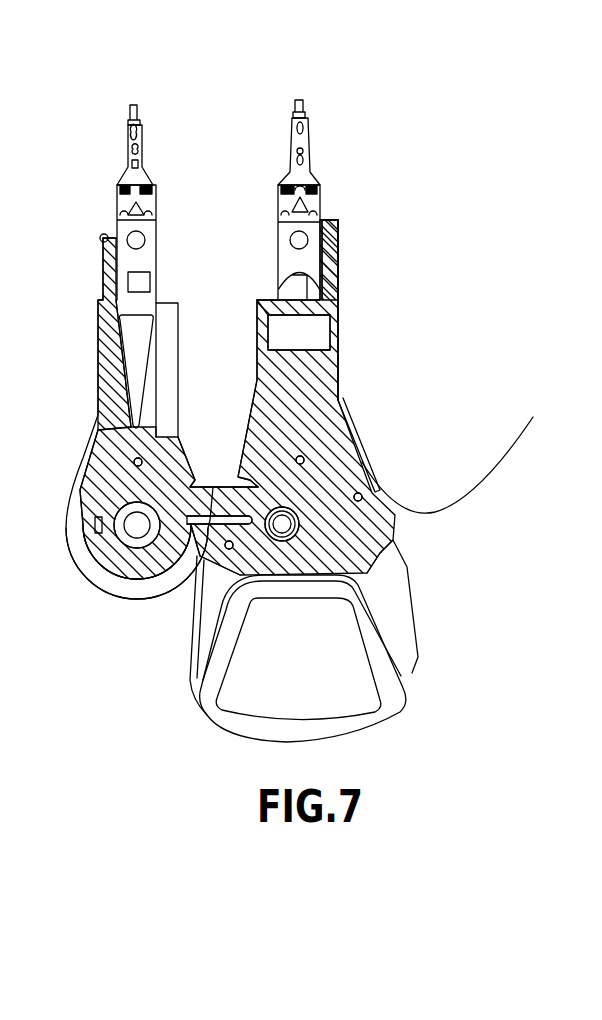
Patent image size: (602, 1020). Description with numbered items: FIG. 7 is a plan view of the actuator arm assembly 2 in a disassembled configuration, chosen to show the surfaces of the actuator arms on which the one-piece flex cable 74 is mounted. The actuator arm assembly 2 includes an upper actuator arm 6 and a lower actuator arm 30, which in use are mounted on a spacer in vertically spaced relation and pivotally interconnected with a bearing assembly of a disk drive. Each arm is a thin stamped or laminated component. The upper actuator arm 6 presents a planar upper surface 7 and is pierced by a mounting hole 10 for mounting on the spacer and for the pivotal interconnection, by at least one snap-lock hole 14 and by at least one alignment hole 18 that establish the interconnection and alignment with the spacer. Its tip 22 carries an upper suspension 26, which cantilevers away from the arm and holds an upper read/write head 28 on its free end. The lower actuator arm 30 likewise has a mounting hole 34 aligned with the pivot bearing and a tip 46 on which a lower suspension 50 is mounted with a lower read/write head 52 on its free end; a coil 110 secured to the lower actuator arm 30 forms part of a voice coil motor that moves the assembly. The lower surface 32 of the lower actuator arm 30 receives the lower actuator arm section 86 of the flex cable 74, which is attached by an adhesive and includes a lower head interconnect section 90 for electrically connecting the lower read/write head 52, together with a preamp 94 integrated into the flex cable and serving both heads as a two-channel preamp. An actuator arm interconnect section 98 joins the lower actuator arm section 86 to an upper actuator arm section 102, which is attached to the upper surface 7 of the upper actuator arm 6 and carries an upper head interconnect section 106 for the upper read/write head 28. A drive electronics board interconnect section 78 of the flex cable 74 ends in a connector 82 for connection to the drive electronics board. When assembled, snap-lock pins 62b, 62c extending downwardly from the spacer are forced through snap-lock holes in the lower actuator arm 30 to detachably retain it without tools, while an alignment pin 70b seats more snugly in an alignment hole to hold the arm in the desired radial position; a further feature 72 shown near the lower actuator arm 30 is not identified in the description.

The actuator arm assembly 2 is at (475, 118).
The upper actuator arm 6 is at (158, 290).
The planar upper surface 7 is at (97, 563).
The mounting hole 10 is at (137, 525).
The snap-lock hole 14 is at (98, 525).
The alignment hole 18 is at (142, 458).
The tip 22 is at (150, 252).
The upper suspension 26 is at (145, 167).
The upper read/write head 28 is at (138, 112).
The lower actuator arm 30 is at (415, 662).
The planar lower surface 32 is at (393, 600).
The mounting hole 34 is at (282, 528).
The tip 46 is at (278, 235).
The lower suspension 50 is at (312, 170).
The lower read/write head 52 is at (304, 110).
The snap-lock pin 62b is at (229, 548).
The snap-lock pin 62c is at (362, 497).
The alignment pin 70b is at (304, 460).
The guide strip 72 is at (350, 407).
The flex cable 74 is at (507, 463).
The drive electronics board interconnect section 78 is at (430, 513).
The connector 82 is at (533, 417).
The lower actuator arm section 86 is at (290, 420).
The lower head interconnect section 90 is at (338, 238).
The preamp 94 is at (318, 338).
The actuator arm interconnect section 98 is at (215, 487).
The upper actuator arm section 102 is at (118, 440).
The upper head interconnect section 106 is at (108, 238).
The coil 110 is at (405, 710).